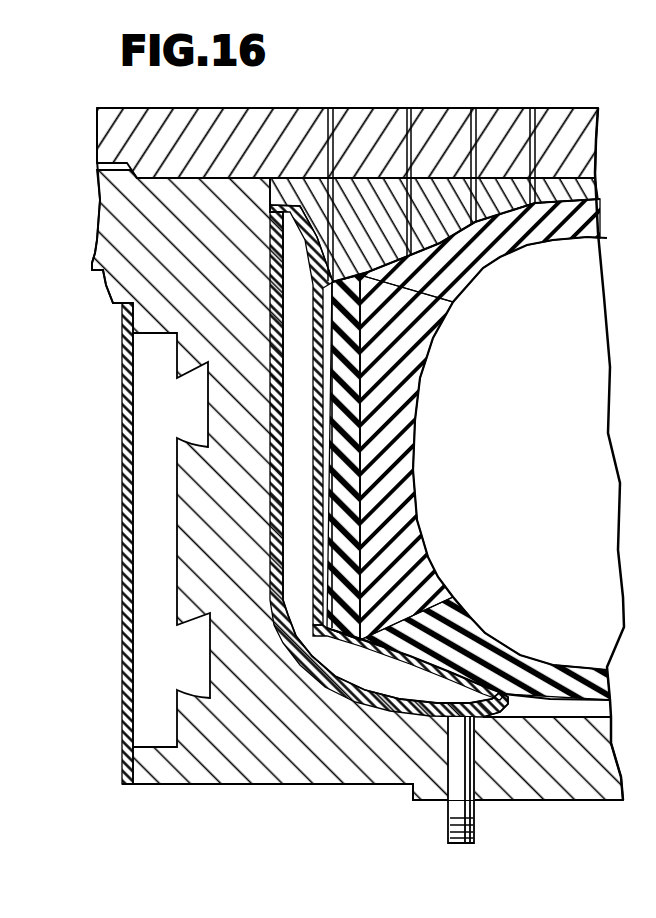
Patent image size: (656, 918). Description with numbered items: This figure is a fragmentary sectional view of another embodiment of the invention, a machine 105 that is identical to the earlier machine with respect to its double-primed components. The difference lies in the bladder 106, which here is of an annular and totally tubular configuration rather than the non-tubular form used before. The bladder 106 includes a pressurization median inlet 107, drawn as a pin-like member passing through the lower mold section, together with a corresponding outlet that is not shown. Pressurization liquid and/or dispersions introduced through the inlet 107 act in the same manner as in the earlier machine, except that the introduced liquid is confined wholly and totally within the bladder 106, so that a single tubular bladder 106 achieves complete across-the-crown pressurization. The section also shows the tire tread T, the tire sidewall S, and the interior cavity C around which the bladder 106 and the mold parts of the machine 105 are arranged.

The machine 105 is at (91, 187).
The bladder 106 is at (394, 680).
The pressurization median inlet 107 is at (475, 822).
The tread T is at (508, 258).
The cavity C is at (405, 397).
The sidewall S is at (348, 491).